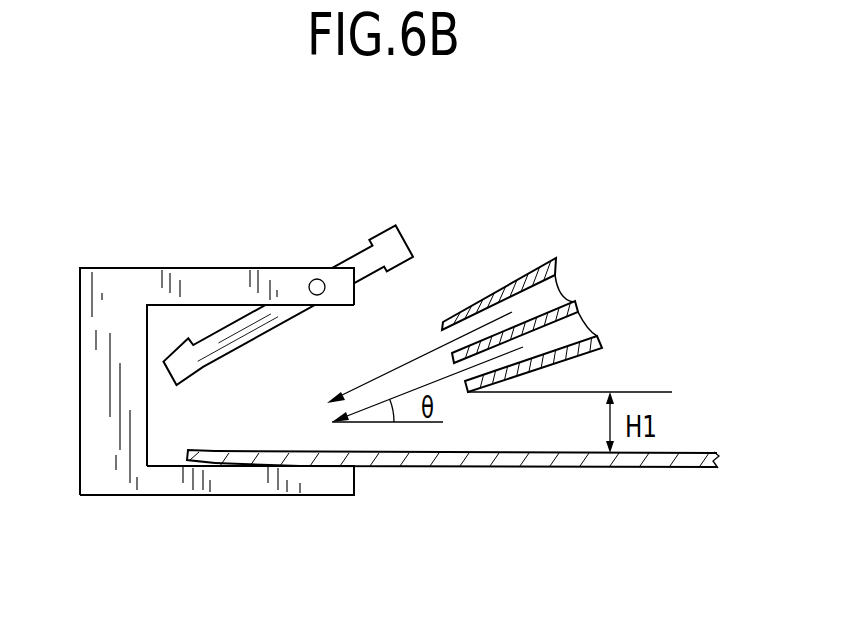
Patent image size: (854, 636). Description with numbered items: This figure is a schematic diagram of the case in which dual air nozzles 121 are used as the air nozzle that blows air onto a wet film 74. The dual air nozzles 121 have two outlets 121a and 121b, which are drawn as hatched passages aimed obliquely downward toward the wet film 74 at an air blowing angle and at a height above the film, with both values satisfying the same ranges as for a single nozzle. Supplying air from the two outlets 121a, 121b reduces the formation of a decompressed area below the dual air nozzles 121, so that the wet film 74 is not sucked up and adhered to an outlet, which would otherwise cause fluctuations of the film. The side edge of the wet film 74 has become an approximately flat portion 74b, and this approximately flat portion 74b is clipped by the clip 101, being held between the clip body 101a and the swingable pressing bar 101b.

The clip 101 is at (116, 183).
The clip body 101a is at (386, 231).
The swingable pressing bar 101b is at (218, 496).
The wet film 74 is at (475, 468).
The approximately flat portion 74b is at (208, 447).
The dual air nozzles 121 is at (525, 275).
The outlet 121a is at (444, 338).
The outlet 121b is at (465, 383).